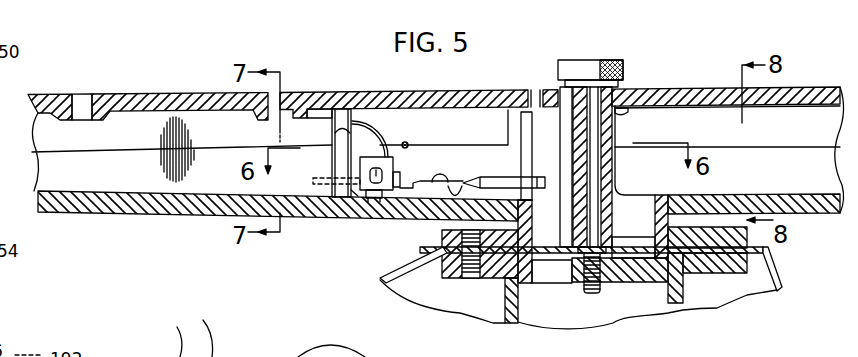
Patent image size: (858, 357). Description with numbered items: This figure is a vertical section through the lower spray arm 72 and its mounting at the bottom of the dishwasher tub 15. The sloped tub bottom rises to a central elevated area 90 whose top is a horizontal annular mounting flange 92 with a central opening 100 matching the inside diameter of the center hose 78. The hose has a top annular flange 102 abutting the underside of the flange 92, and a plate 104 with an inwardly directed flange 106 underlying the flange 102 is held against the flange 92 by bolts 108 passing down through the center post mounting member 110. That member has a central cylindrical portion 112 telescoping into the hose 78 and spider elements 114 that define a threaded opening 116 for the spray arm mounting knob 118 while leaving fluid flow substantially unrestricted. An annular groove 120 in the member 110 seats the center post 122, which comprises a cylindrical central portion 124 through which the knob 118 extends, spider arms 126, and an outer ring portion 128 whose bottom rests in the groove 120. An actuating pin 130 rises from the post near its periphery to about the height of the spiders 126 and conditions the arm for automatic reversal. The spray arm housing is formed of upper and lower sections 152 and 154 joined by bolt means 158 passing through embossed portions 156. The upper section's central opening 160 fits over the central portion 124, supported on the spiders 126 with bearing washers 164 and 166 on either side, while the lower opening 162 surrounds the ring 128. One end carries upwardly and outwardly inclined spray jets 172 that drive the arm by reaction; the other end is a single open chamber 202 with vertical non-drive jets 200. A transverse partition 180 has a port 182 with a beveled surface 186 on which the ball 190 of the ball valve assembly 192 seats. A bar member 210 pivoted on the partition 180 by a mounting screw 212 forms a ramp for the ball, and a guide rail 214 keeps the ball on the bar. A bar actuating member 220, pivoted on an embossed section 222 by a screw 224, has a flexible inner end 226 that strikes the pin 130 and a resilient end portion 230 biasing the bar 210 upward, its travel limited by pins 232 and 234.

The frame 15 is at (800, 85).
The lower spray arm 72 is at (657, 76).
The center hose 78 is at (492, 324).
The central elevated area 90 is at (378, 281).
The annular mounting flange 92 is at (424, 250).
The central opening 100 is at (667, 250).
The top annular flange 102 is at (492, 262).
The plate 104 is at (740, 268).
The inwardly directed flange 106 is at (688, 273).
The bolts 108 is at (455, 262).
The center post mounting member 110 is at (755, 248).
The central cylindrical portion 112 is at (527, 312).
The spider elements 114 is at (630, 283).
The threaded opening 116 is at (590, 294).
The spray arm mounting knob 118 is at (612, 56).
The annular groove 120 is at (552, 272).
The center post 122 is at (622, 205).
The cylindrical central portion 124 is at (613, 228).
The spider arms 126 is at (616, 143).
The outer cylindrical ring portion 128 is at (662, 197).
The actuating pin 130 is at (521, 128).
The upper housing section 152 is at (0, 100).
The lower housing section 154 is at (170, 201).
The embossed portions 156 is at (303, 356).
The bolt means 158 is at (367, 356).
The central opening 160 is at (563, 90).
The centrally disposed opening 162 is at (530, 232).
The bearing washer 164 is at (622, 84).
The bearing washer 166 is at (622, 113).
The spray jets 172 is at (291, 90).
The transversely extending partition 180 is at (343, 119).
The port 182 is at (334, 131).
The beveled surfaces 186 is at (352, 198).
The ball valve 190 is at (372, 121).
The ball valve assembly 192 is at (402, 140).
The non-drive jets 200 is at (750, 97).
The fluid chamber 202 is at (827, 170).
The bar member 210 is at (366, 168).
The mounting screw 212 is at (436, 170).
The guide rail 214 is at (411, 143).
The bar actuating member 220 is at (458, 182).
The embossed section 222 is at (372, 198).
The screw 224 is at (438, 188).
The flexible inner end 226 is at (530, 215).
The resilient end portion 230 is at (374, 198).
The pin 232 is at (380, 200).
The pin 234 is at (392, 172).